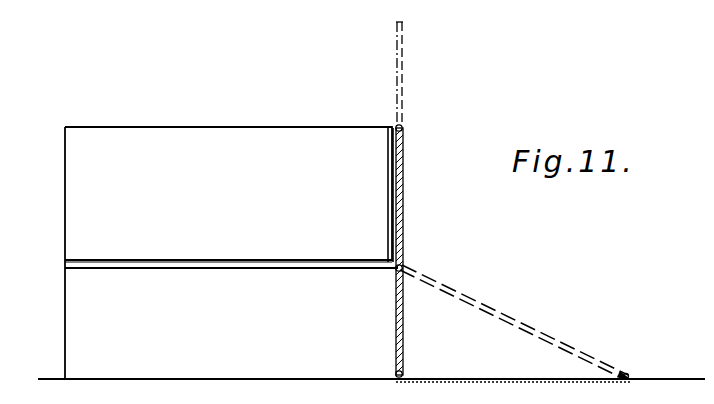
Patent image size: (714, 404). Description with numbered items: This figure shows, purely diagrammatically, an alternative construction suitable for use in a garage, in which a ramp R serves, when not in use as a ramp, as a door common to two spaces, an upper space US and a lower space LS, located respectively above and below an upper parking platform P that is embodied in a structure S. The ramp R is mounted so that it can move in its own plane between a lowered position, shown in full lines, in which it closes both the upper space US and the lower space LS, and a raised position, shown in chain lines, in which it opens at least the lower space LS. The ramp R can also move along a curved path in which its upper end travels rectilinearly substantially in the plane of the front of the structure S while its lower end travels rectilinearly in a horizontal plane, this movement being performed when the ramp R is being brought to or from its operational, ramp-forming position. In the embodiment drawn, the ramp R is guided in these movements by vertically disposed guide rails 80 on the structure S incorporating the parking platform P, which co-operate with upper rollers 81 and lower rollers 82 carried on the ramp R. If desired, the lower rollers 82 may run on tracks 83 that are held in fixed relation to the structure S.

The guide rail 80 is at (389, 196).
The upper roller 81 is at (404, 128).
The lower roller 82 is at (396, 374).
The track 83 is at (468, 380).
The ramp R is at (405, 68).
The structure S is at (63, 182).
The upper space US is at (228, 193).
The lower space LS is at (231, 303).
The upper parking platform P is at (146, 271).